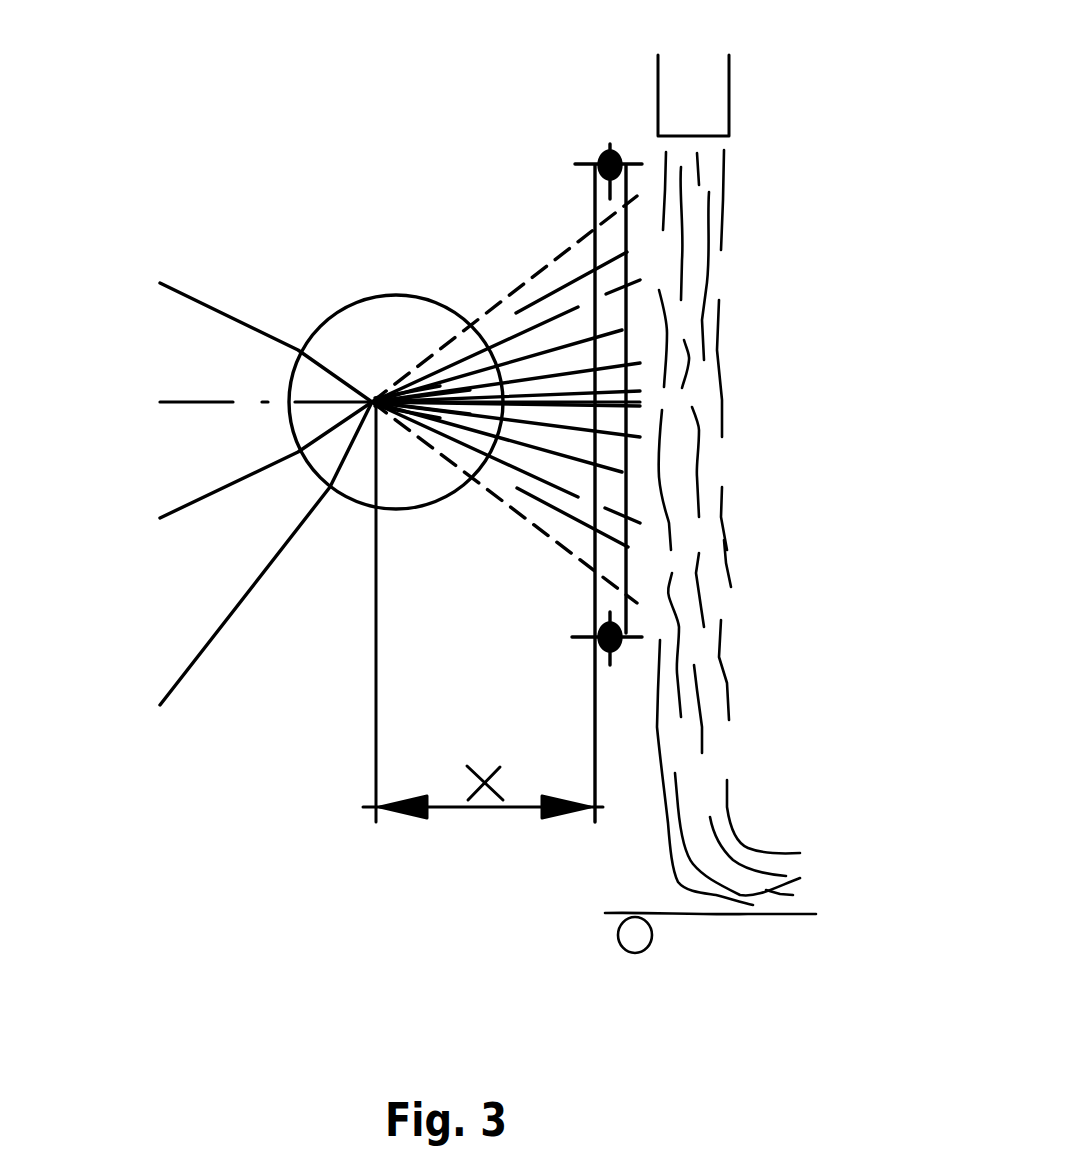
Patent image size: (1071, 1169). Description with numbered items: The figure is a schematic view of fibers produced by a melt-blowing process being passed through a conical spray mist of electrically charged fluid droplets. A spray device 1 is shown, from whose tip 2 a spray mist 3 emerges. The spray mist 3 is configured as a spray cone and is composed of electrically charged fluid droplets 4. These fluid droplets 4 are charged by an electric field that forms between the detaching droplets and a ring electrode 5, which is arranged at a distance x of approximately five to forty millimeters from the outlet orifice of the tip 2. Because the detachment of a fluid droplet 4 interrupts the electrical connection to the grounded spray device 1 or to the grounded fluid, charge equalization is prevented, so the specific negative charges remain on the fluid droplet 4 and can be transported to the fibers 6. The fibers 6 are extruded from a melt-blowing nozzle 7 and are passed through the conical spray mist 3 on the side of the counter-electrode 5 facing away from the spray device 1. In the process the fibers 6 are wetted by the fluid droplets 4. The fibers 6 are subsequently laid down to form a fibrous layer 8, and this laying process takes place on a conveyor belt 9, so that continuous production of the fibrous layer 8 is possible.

The spray device 1 is at (154, 490).
The tip 2 is at (312, 379).
The spray mist 3 is at (507, 282).
The fluid droplets 4 is at (549, 305).
The ring electrode 5 is at (595, 142).
The fibers 6 is at (655, 157).
The melt-blowing nozzle 7 is at (710, 79).
The fibrous layer 8 is at (736, 870).
The conveyor belt 9 is at (602, 907).